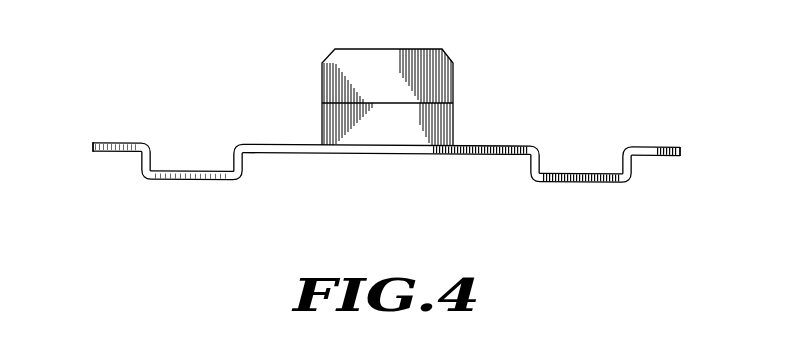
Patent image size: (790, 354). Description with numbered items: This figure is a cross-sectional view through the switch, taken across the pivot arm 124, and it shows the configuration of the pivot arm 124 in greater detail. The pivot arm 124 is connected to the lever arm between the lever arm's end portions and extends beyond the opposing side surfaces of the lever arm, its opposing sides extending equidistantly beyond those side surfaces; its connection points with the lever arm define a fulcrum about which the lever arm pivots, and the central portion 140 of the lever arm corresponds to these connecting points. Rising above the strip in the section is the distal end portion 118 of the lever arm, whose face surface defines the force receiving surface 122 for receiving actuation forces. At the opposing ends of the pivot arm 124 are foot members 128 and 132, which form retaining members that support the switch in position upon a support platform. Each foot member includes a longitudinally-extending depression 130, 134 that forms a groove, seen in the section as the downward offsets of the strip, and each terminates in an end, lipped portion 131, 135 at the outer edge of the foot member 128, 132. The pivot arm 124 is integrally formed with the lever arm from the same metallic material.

The distal end portion 118 is at (338, 62).
The force receiving surface 122 is at (453, 122).
The pivot arm 124 is at (275, 156).
The foot member 128 is at (647, 147).
The longitudinally-extending depression 130 is at (582, 183).
The lipped portion 131 is at (680, 152).
The foot member 132 is at (159, 139).
The longitudinally-extending depression 134 is at (192, 181).
The lipped portion 135 is at (93, 146).
The central portion 140 is at (383, 156).